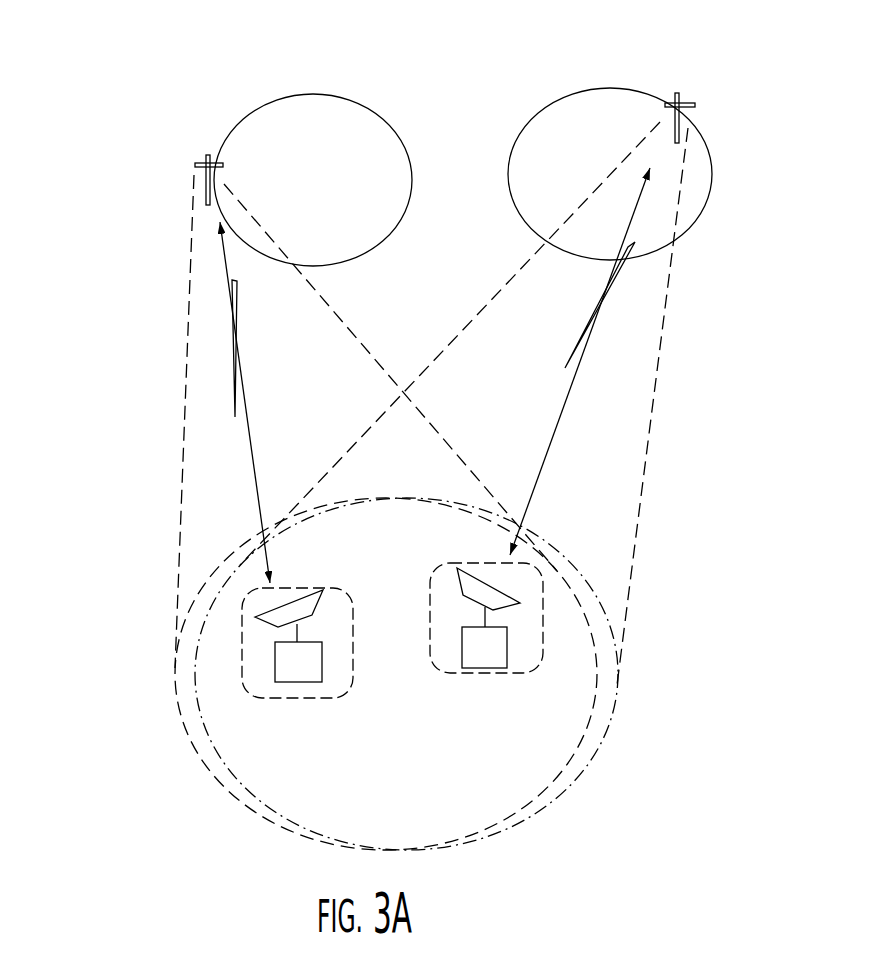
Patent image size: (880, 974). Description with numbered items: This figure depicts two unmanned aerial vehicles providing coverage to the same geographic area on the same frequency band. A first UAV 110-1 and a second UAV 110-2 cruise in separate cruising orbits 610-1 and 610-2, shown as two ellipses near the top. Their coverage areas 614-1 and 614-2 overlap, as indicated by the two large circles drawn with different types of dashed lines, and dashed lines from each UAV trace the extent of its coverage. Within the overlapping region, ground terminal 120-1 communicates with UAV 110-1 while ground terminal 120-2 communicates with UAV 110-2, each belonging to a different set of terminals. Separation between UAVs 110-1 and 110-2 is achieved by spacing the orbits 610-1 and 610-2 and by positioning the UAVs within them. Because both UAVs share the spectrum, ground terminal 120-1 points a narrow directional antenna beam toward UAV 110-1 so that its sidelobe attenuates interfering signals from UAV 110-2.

The cruising orbit 610-1 is at (242, 118).
The cruising orbit 610-2 is at (540, 112).
The UAV 110-1 is at (195, 165).
The UAV 110-2 is at (694, 105).
The coverage area 614-1 is at (175, 698).
The coverage area 614-2 is at (615, 708).
The ground terminal 120-1 is at (303, 698).
The ground terminal 120-2 is at (482, 673).